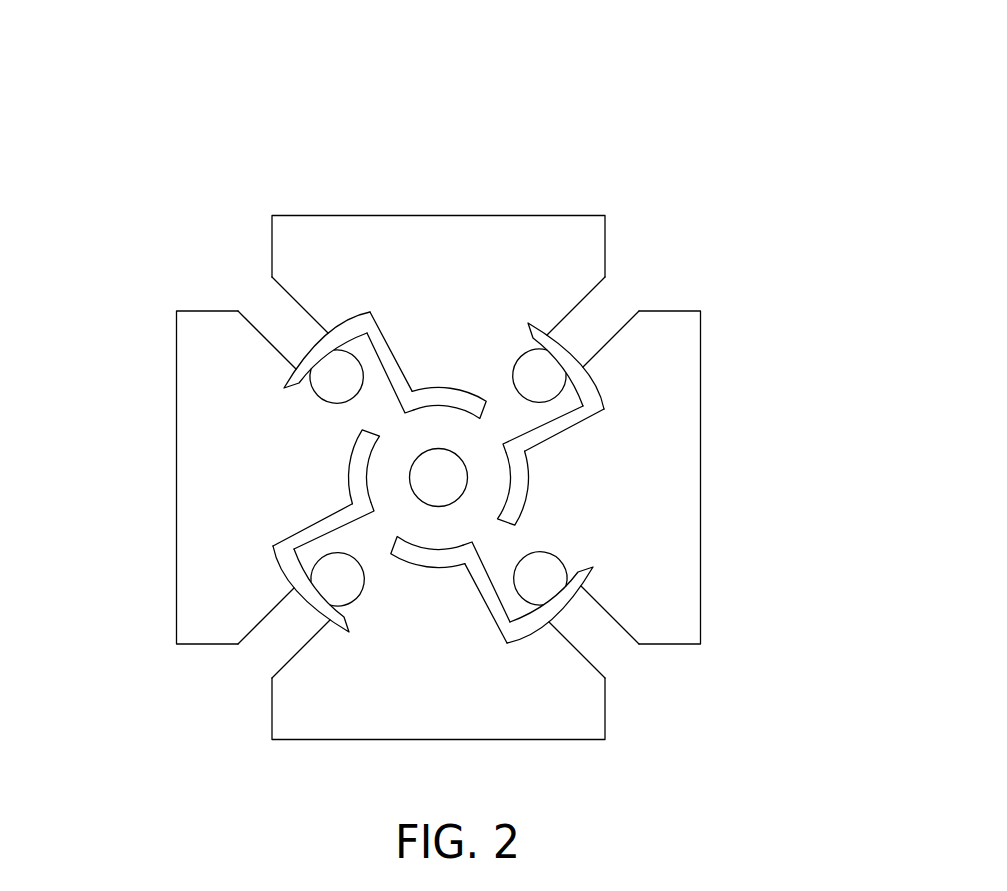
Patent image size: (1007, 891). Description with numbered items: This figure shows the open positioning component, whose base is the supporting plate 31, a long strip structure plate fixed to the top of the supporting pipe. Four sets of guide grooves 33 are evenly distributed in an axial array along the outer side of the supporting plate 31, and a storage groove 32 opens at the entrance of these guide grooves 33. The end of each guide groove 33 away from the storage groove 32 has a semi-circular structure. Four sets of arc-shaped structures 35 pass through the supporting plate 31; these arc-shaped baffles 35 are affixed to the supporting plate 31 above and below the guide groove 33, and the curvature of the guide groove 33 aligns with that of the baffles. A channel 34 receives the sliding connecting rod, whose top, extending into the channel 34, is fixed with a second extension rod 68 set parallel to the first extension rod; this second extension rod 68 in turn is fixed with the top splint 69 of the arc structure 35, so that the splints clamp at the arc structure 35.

The supporting plate 31 is at (438, 219).
The storage groove 32 is at (683, 414).
The guide groove 33 is at (702, 408).
The channel 34 is at (652, 548).
The arc-shaped structure 35 is at (229, 413).
The second extension rod 68 is at (226, 503).
The top splint 69 is at (247, 654).